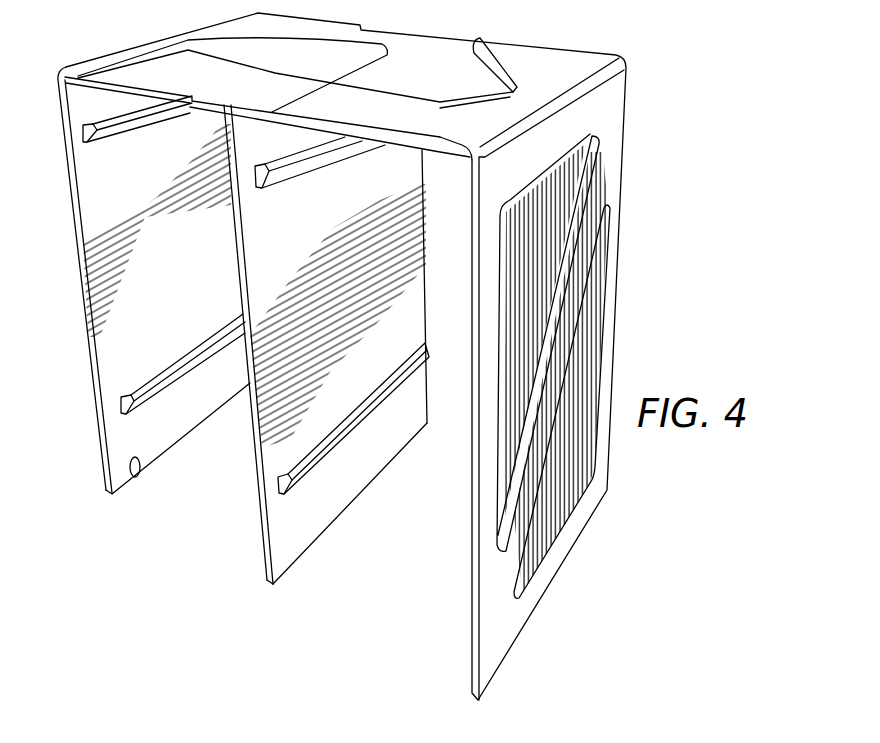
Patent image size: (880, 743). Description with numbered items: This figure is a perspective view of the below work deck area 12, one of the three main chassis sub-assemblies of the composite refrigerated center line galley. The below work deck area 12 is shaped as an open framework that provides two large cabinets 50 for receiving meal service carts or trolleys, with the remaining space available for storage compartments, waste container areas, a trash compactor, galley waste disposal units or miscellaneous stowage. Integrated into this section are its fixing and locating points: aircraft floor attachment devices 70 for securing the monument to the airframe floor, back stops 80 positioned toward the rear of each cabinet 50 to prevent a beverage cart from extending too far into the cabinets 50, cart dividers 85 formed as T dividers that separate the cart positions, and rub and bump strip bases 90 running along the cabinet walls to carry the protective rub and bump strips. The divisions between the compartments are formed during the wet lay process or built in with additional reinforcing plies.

The below work deck area 12 is at (607, 170).
The cabinets 50 is at (224, 533).
The aircraft floor attachment devices 70 is at (137, 470).
The back stops 80 is at (430, 352).
The cart dividers 85 is at (338, 513).
The rub and bump strip bases 90 is at (150, 387).